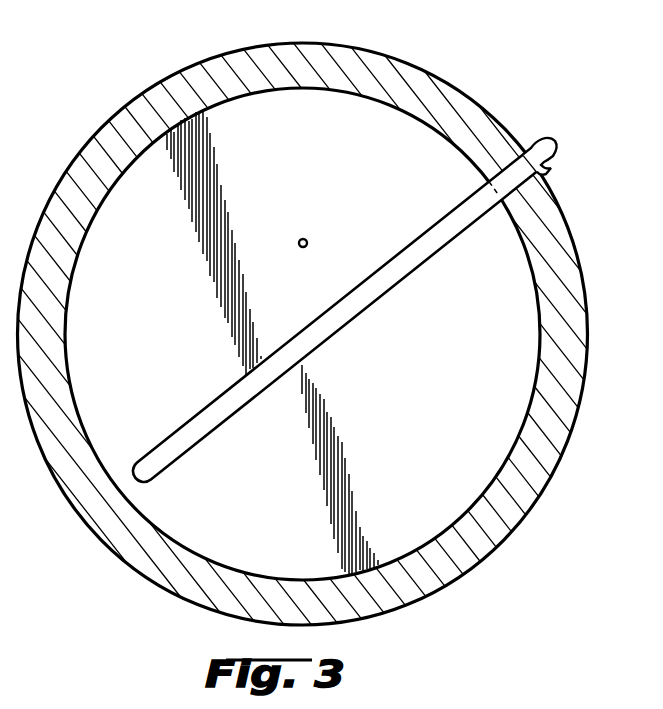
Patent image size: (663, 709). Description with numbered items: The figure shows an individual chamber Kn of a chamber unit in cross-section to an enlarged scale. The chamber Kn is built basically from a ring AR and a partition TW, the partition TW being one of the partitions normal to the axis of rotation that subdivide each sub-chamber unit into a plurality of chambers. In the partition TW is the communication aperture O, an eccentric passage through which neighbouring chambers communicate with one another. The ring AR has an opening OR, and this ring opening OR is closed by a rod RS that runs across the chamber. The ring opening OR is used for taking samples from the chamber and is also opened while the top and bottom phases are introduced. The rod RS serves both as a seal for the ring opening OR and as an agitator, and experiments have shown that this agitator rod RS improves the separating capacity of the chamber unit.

The ring AR is at (557, 433).
The chamber Kn is at (412, 124).
The partition TW is at (210, 328).
The rod RS is at (222, 423).
The opening OR is at (533, 184).
The communication aperture O is at (307, 241).